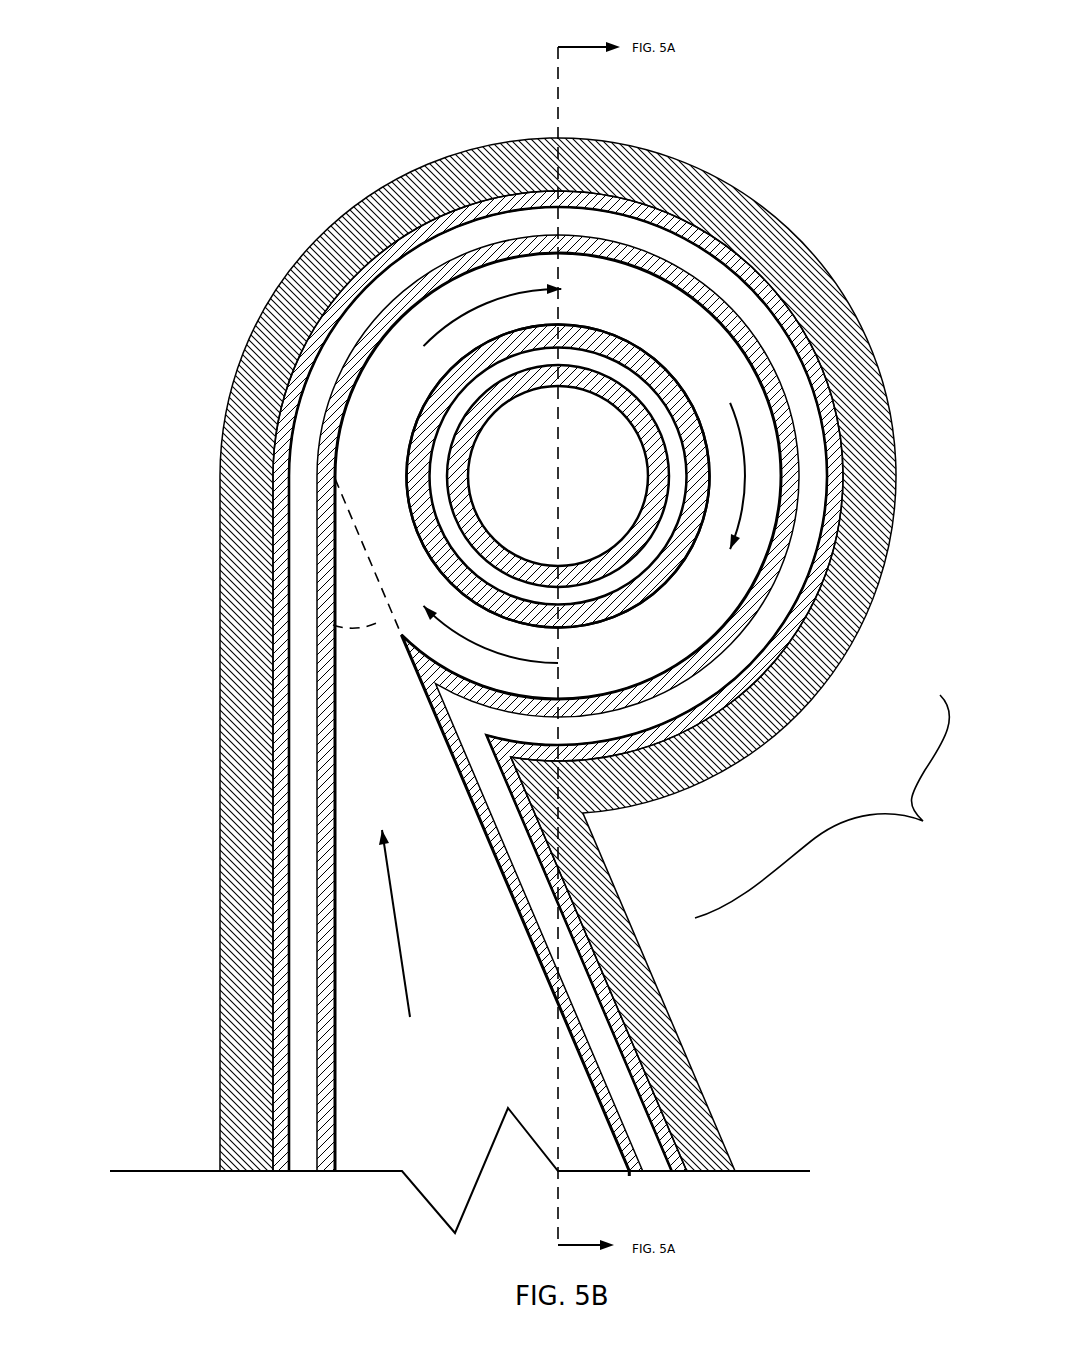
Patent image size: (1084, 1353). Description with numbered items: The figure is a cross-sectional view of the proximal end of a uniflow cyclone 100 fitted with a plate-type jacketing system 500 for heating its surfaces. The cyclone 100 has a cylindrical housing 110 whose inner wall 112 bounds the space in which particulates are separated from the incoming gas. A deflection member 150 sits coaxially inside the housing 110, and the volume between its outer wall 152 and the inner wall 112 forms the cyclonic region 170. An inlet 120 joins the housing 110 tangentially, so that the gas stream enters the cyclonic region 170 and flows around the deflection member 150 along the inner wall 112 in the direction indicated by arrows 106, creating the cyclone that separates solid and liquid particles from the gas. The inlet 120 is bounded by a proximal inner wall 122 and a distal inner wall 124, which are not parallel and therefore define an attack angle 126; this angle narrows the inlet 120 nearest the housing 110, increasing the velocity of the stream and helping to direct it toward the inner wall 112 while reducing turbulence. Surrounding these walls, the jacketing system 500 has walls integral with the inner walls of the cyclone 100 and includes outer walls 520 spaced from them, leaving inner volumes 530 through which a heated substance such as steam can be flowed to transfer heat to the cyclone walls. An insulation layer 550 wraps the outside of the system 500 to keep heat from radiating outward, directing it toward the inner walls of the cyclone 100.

The cyclone 100 is at (124, 44).
The housing 110 is at (368, 180).
The inner wall 112 is at (338, 393).
The inlet 120 is at (198, 860).
The proximal inner wall 122 is at (328, 1020).
The distal inner wall 124 is at (544, 950).
The attack angle 126 is at (357, 627).
The arrows 106 is at (428, 348).
The deflection member 150 is at (654, 340).
The outer wall 152 is at (601, 329).
The cyclonic region 170 is at (391, 450).
The plate-type jacketing system 500 is at (904, 845).
The outer walls 520 is at (357, 283).
The inner volumes 530 is at (350, 338).
The insulation layer 550 is at (250, 432).